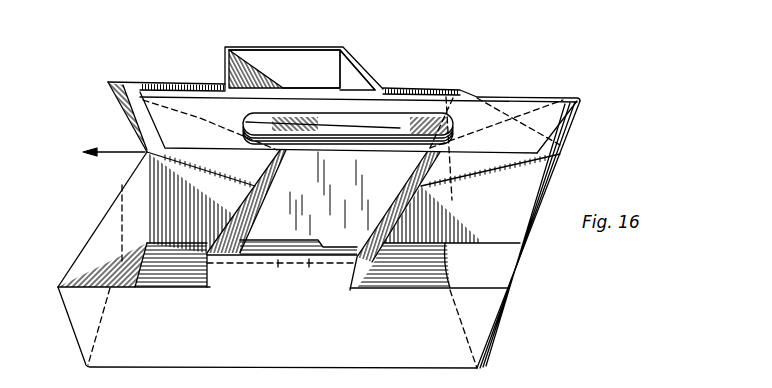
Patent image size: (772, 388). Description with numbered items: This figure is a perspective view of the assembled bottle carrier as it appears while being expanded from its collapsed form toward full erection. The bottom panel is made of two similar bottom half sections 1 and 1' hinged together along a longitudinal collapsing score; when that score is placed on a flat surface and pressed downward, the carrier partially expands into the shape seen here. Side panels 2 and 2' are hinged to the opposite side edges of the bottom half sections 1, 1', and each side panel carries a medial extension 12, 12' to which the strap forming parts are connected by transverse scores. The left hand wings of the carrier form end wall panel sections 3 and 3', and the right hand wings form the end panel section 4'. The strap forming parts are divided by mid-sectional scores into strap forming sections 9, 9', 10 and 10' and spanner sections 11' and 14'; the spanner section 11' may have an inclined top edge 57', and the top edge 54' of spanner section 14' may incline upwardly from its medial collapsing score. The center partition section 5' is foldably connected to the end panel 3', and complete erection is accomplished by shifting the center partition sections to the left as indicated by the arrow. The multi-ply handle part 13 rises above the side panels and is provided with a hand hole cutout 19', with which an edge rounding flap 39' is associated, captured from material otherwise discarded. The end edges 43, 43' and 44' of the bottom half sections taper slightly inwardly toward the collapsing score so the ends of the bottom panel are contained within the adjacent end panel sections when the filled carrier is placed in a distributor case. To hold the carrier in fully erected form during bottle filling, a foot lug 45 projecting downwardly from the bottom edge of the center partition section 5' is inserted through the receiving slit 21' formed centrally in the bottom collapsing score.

The side panel 2 is at (300, 68).
The strap forming section 9 is at (245, 53).
The medial extension 12 is at (284, 54).
The strap forming section 10 is at (364, 60).
The top edge 54' is at (496, 104).
The multi-ply handle part 13 is at (531, 90).
The end wall panel section 3 is at (98, 117).
The inclined top edge 57' is at (210, 123).
The edge rounding flap 39' is at (348, 119).
The hand hole cutout 19' is at (459, 148).
The spanner section 11' is at (338, 124).
The spanner section 14' is at (517, 168).
The end edge 43 is at (101, 221).
The strap forming section 9' is at (216, 218).
The center partition section 5' is at (433, 235).
The foot lug 45 is at (337, 243).
The strap forming section 10' is at (415, 221).
The end wall panel section 3' is at (95, 219).
The bottom half section 1 is at (446, 254).
The bottom half section 1' is at (429, 265).
The end panel section 4' is at (528, 234).
The medial extension 12' is at (207, 278).
The receiving slit 21' is at (282, 282).
The side panel 2' is at (267, 327).
The end edge 43' is at (73, 326).
The end edge 44' is at (496, 329).